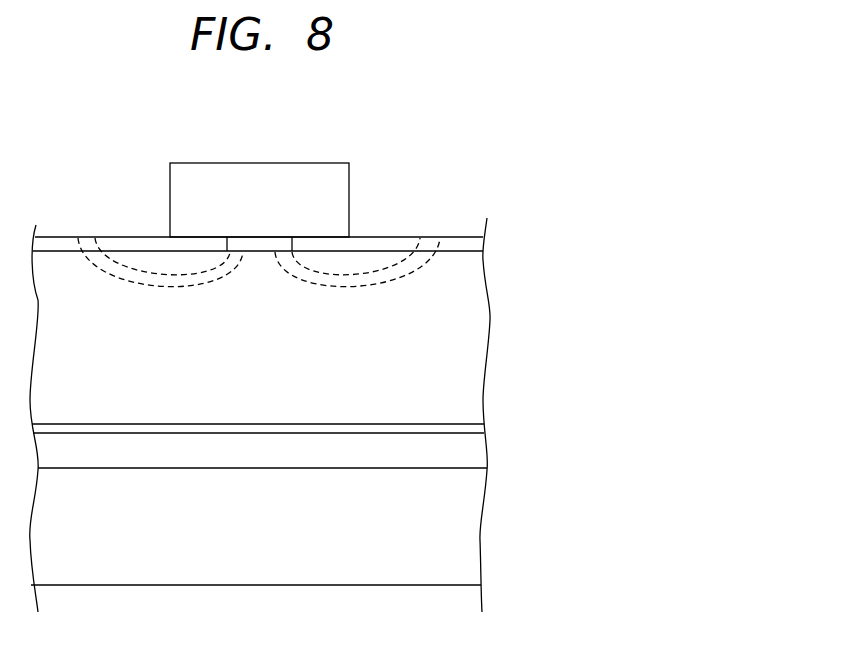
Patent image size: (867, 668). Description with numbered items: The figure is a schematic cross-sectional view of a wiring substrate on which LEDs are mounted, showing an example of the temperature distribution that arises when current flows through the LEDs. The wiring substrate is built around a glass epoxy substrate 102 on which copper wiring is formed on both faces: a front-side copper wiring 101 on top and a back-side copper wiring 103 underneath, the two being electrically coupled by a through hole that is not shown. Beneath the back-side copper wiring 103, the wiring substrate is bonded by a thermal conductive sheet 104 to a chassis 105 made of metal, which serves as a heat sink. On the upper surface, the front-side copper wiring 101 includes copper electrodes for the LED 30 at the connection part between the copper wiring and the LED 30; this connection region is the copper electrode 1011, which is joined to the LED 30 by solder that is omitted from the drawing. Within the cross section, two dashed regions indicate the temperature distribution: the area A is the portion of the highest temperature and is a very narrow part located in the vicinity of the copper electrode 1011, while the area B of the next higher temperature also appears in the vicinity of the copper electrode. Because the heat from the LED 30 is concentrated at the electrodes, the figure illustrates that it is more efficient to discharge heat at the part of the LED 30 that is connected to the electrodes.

The LED 30 is at (256, 162).
The front-side copper wiring 101 is at (473, 247).
The copper electrode 1011 is at (205, 243).
The area A is at (375, 263).
The area B is at (407, 262).
The glass epoxy substrate 102 is at (470, 339).
The back-side copper wiring 103 is at (470, 425).
The thermal conductive sheet 104 is at (474, 455).
The chassis 105 is at (470, 519).